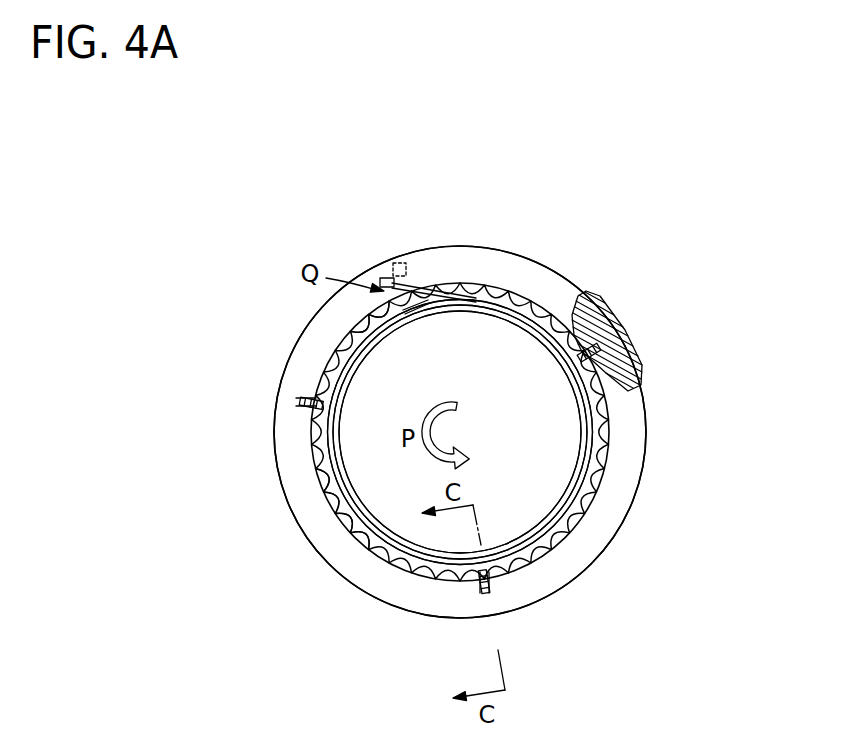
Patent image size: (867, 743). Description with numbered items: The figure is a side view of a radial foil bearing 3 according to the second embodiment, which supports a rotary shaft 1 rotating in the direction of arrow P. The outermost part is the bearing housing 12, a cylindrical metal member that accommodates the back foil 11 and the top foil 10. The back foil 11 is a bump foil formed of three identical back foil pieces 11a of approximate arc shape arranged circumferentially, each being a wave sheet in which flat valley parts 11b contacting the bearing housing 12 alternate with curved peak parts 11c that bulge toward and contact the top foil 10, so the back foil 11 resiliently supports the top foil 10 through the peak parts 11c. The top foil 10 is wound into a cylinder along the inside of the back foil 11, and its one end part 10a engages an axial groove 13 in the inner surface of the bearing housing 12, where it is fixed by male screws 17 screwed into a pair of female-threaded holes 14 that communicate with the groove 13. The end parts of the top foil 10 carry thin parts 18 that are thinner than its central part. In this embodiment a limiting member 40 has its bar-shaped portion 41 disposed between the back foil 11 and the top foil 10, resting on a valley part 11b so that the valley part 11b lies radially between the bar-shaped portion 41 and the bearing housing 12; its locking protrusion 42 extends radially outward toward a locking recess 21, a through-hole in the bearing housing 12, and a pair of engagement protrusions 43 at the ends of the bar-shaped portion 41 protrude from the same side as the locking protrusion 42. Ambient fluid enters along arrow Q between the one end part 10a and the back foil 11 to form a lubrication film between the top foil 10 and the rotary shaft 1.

The rotary shaft 1 is at (520, 494).
The radial foil bearing 3 is at (558, 250).
The top foil 10 is at (598, 452).
The one end part 10a is at (429, 293).
The back foil 11 is at (610, 440).
The back foil piece 11a is at (342, 349).
The valley part 11b is at (337, 521).
The peak part 11c is at (343, 518).
The bearing housing 12 is at (637, 425).
The groove 13 is at (410, 283).
The hole 14 is at (402, 263).
The male screw 17 is at (391, 270).
The thin part 18 is at (401, 323).
The locking recess 21 is at (602, 349).
The limiting member 40 is at (455, 452).
The bar-shaped portion 41 is at (592, 349).
The locking protrusion 42 is at (613, 362).
The engagement protrusion 43 is at (312, 406).